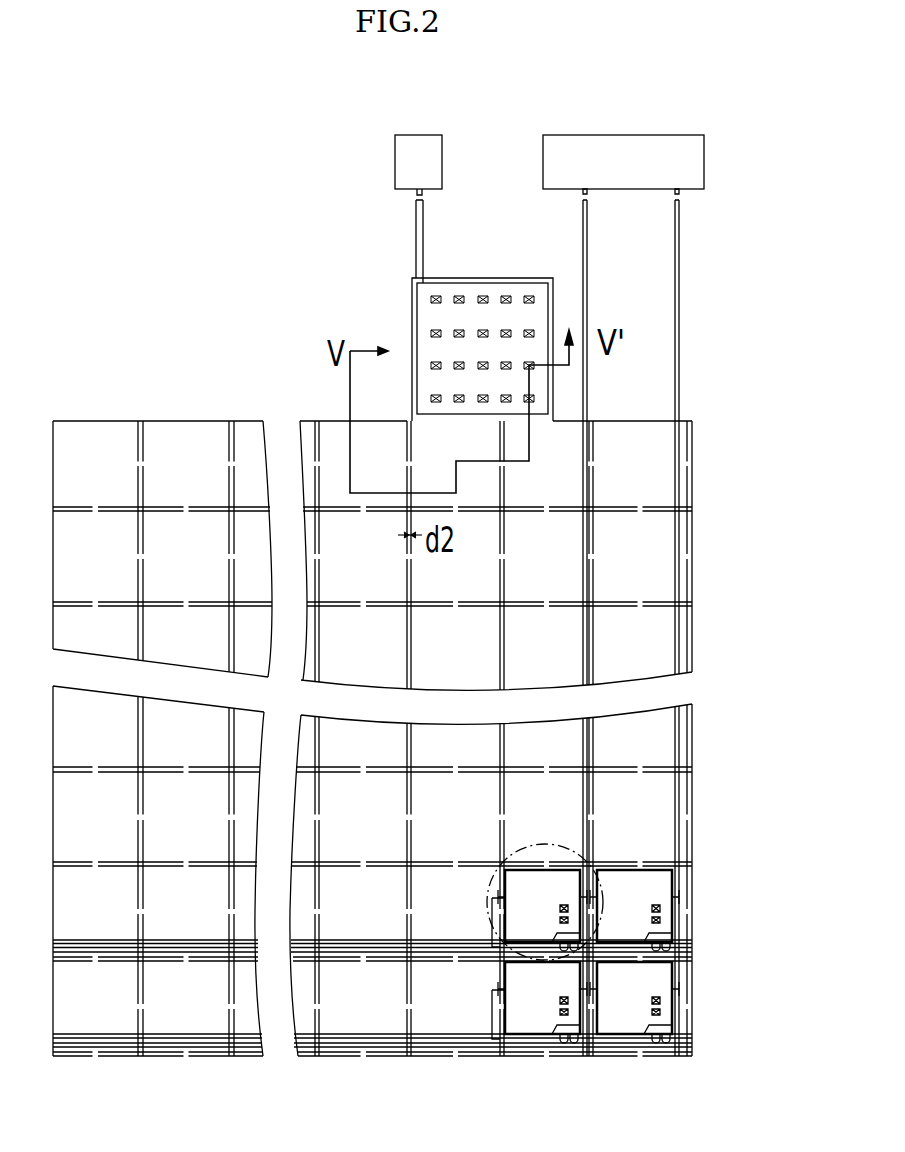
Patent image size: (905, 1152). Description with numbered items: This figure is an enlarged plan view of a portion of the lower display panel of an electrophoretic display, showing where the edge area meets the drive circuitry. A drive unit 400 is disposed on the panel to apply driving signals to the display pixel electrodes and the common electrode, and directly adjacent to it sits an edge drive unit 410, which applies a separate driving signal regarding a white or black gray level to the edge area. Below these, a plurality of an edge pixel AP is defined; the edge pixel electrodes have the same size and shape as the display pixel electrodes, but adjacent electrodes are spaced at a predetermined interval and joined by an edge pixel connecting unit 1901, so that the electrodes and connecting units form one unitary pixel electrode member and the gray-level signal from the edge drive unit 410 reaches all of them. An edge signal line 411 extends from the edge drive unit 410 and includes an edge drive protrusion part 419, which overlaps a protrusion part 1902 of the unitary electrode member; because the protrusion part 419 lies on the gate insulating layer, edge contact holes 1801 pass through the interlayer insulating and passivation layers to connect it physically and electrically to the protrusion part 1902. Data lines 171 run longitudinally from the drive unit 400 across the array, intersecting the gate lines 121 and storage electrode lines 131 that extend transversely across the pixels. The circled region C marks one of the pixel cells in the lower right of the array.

The drive unit 400 is at (572, 150).
The edge drive unit 410 is at (395, 152).
The edge signal line 411 is at (416, 233).
The edge drive protrusion part 419 is at (412, 300).
The protrusion part 1902 is at (510, 278).
The edge contact hole 1801 is at (535, 300).
The data line 171 is at (585, 402).
The edge pixel connecting unit 1901 is at (410, 461).
The storage electrode line 131 is at (355, 940).
The gate line 121 is at (438, 952).
The edge pixel AP is at (330, 420).
The pixel C is at (548, 843).